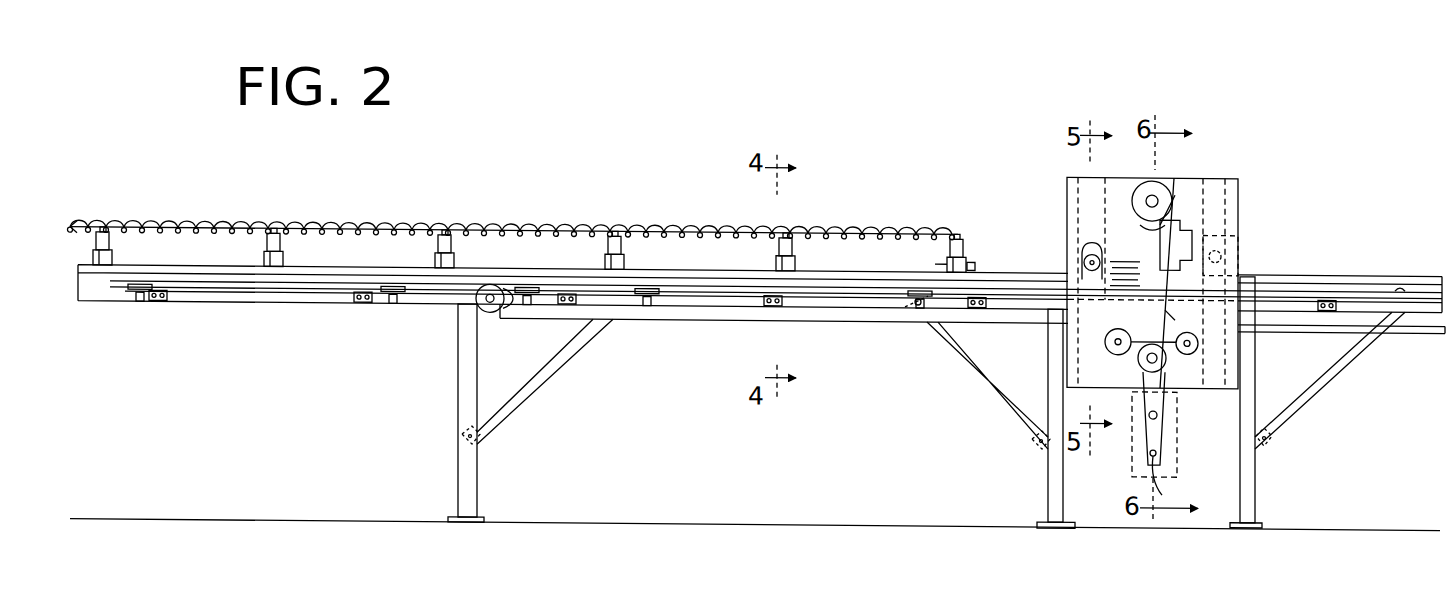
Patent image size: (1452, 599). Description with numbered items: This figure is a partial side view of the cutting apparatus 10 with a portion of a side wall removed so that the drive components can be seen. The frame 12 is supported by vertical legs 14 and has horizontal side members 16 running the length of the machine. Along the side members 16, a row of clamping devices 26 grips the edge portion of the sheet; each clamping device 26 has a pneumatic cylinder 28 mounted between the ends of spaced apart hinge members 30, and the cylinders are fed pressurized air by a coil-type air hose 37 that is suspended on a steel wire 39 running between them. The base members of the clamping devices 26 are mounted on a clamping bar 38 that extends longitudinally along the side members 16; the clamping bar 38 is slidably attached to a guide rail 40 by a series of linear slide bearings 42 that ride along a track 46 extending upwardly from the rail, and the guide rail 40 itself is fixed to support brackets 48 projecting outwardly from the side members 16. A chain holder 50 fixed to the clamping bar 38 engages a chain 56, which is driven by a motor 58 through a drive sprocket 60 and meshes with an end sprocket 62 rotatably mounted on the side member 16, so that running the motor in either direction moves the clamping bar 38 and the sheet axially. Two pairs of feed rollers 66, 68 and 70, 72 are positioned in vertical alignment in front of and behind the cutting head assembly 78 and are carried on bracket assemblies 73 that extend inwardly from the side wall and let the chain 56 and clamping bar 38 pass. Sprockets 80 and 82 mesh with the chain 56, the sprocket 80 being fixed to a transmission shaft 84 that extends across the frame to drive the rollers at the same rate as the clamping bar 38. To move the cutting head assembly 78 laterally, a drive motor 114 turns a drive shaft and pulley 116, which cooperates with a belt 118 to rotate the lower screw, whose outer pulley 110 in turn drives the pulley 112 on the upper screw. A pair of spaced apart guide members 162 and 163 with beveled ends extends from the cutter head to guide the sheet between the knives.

The cutting apparatus 10 is at (1270, 170).
The frame 12 is at (452, 400).
The vertical legs 14 is at (478, 468).
The horizontal side members 16 is at (272, 302).
The clamping devices 26 is at (113, 224).
The pneumatic cylinder 28 is at (940, 256).
The hinge members 30 is at (976, 258).
The coil-type air hose 37 is at (880, 212).
The clamping bar 38 is at (815, 302).
The steel wire 39 is at (915, 215).
The guide rail 40 is at (852, 302).
The linear slide bearings 42 is at (140, 301).
The track 46 is at (1382, 278).
The support brackets 48 is at (168, 300).
The chain holder 50 is at (915, 302).
The chain 56 is at (700, 316).
The motor 58 is at (1132, 445).
The drive sprocket 60 is at (1162, 478).
The end sprocket 62 is at (503, 306).
The feed roller 66 is at (1080, 228).
The feed roller 68 is at (1075, 262).
The feed roller 70 is at (1232, 246).
The feed roller 72 is at (1238, 264).
The bracket assemblies 73 is at (1068, 190).
The cutting head assembly 78 is at (1182, 205).
The sprocket 80 is at (1108, 340).
The sprocket 82 is at (1170, 362).
The transmission shaft 84 is at (1085, 365).
The outer pulley 110 is at (1160, 405).
The pulley 112 is at (1165, 185).
The drive motor 114 is at (1160, 445).
The drive shaft and pulley 116 is at (1160, 410).
The belt 118 is at (1133, 185).
The guide member 162 is at (1170, 308).
The guide member 163 is at (1132, 293).